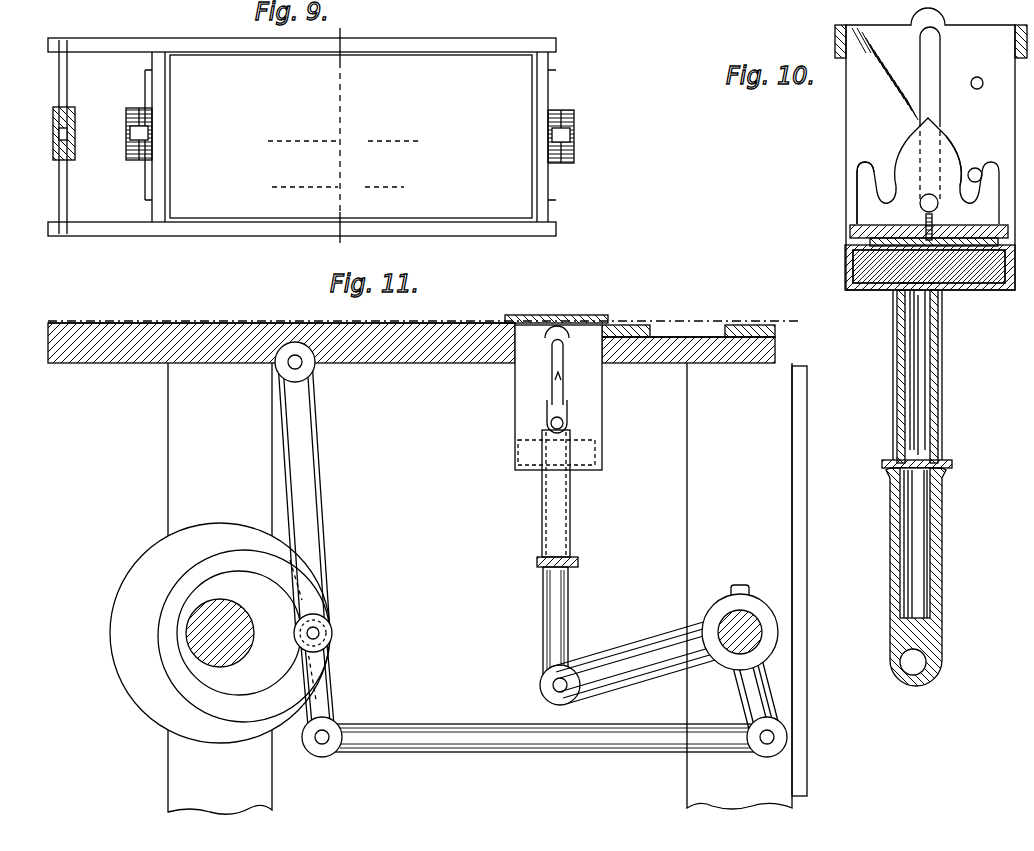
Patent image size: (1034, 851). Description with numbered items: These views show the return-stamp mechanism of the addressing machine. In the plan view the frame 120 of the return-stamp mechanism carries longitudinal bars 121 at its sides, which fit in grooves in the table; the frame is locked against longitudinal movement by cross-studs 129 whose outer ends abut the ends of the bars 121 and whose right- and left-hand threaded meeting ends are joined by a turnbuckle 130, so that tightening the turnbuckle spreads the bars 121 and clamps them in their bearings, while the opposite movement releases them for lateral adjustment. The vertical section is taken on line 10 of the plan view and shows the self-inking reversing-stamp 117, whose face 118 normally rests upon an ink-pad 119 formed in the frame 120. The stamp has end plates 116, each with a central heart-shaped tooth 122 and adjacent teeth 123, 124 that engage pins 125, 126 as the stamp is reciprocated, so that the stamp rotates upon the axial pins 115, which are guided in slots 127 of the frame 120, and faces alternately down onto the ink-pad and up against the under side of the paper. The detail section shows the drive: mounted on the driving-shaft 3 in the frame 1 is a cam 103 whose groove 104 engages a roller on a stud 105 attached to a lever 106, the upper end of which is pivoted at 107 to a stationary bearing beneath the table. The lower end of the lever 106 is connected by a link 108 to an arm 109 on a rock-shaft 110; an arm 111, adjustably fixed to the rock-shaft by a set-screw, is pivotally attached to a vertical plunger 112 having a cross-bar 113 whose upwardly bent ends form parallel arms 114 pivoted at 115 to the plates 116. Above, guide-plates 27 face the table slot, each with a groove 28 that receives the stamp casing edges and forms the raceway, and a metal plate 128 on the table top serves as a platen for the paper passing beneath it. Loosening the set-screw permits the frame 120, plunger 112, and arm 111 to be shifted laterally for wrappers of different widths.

In FIG. 11, the frame 1 is at (178, 776).
In FIG. 11, the driving-shaft 3 is at (248, 618).
In FIG. 9, the section line 10 is at (334, 139).
In FIG. 11, the guide-plates 27 is at (625, 325).
In FIG. 11, the groove 28 is at (722, 328).
In FIG. 11, the cam 103 is at (126, 576).
In FIG. 11, the groove 104 is at (176, 668).
In FIG. 11, the stud 105 is at (318, 630).
In FIG. 11, the lever 106 is at (305, 498).
In FIG. 11, the pivot 107 is at (298, 364).
In FIG. 11, the link 108 is at (534, 730).
In FIG. 11, the arm 109 is at (788, 702).
In FIG. 11, the rock-shaft 110 is at (728, 622).
In FIG. 11, the arm 111 is at (641, 653).
In FIG. 10, the plunger 112 is at (944, 572).
In FIG. 11, the plunger 112 is at (550, 600).
In FIG. 10, the cross-bar 113 is at (952, 470).
In FIG. 11, the cross-bar 113 is at (545, 560).
In FIG. 9, the parallel arms 114 is at (136, 150).
In FIG. 10, the parallel arms 114 is at (940, 384).
In FIG. 11, the parallel arms 114 is at (542, 491).
In FIG. 10, the axial pins 115 is at (922, 208).
In FIG. 10, the plates 116 is at (856, 220).
In FIG. 10, the self-inking reversing-stamp 117 is at (850, 240).
In FIG. 9, the face 118 is at (351, 137).
In FIG. 10, the face 118 is at (900, 248).
In FIG. 10, the ink-pad 119 is at (888, 290).
In FIG. 9, the frame 120 is at (152, 90).
In FIG. 10, the frame 120 is at (846, 126).
In FIG. 11, the frame 120 is at (515, 410).
In FIG. 9, the longitudinal bars 121 is at (452, 31).
In FIG. 10, the longitudinal bars 121 is at (835, 36).
In FIG. 11, the longitudinal bars 121 is at (508, 335).
In FIG. 10, the heart-shaped tooth 122 is at (898, 152).
In FIG. 11, the heart-shaped tooth 122 is at (552, 386).
In FIG. 10, the tooth 123 is at (866, 180).
In FIG. 10, the tooth 124 is at (995, 182).
In FIG. 10, the pin 125 is at (1004, 57).
In FIG. 10, the pin 126 is at (980, 169).
In FIG. 10, the slots 127 is at (920, 48).
In FIG. 11, the slots 127 is at (558, 368).
In FIG. 11, the metal plate 128 is at (577, 316).
In FIG. 9, the cross-studs 129 is at (57, 86).
In FIG. 9, the turnbuckle 130 is at (53, 134).